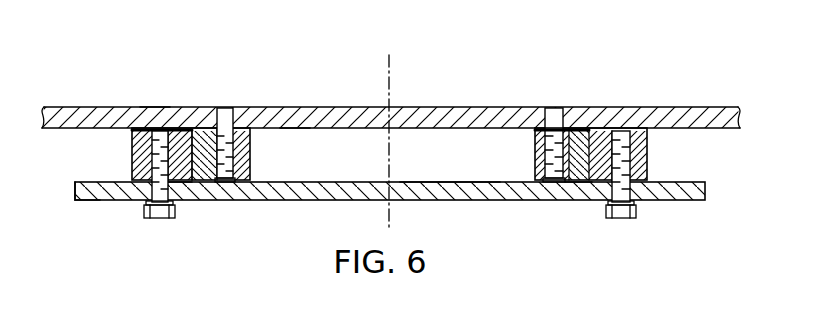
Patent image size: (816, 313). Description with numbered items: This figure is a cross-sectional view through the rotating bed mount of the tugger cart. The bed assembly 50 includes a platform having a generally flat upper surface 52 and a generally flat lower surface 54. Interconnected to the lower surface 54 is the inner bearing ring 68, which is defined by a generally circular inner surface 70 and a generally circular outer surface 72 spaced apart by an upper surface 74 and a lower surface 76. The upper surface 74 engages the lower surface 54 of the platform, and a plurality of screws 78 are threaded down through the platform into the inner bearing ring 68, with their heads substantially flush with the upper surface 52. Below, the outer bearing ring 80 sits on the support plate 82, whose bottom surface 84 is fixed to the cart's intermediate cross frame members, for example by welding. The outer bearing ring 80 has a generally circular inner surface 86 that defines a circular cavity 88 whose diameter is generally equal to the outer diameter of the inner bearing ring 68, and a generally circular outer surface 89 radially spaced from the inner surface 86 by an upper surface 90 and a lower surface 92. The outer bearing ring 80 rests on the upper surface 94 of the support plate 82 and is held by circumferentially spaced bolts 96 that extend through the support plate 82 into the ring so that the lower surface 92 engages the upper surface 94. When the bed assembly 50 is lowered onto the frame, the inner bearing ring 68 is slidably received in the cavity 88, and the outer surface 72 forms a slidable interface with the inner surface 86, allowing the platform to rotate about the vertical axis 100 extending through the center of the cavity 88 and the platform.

The bed assembly 50 is at (70, 113).
The upper surface 52 is at (153, 108).
The lower surface 54 is at (287, 132).
The inner bearing ring 68 is at (204, 186).
The inner surface 70 is at (533, 156).
The outer surface 72 is at (604, 138).
The upper surface 74 is at (578, 128).
The lower surface 76 is at (573, 183).
The screws 78 is at (228, 101).
The outer bearing ring 80 is at (126, 148).
The support plate 82 is at (712, 199).
The bottom surface 84 is at (87, 201).
The inner surface 86 is at (582, 170).
The circular cavity 88 is at (331, 162).
The outer surface 89 is at (132, 166).
The upper surface 90 is at (148, 130).
The lower surface 92 is at (177, 187).
The upper surface 94 is at (446, 182).
The bolts 96 is at (155, 227).
The vertical axis 100 is at (391, 75).